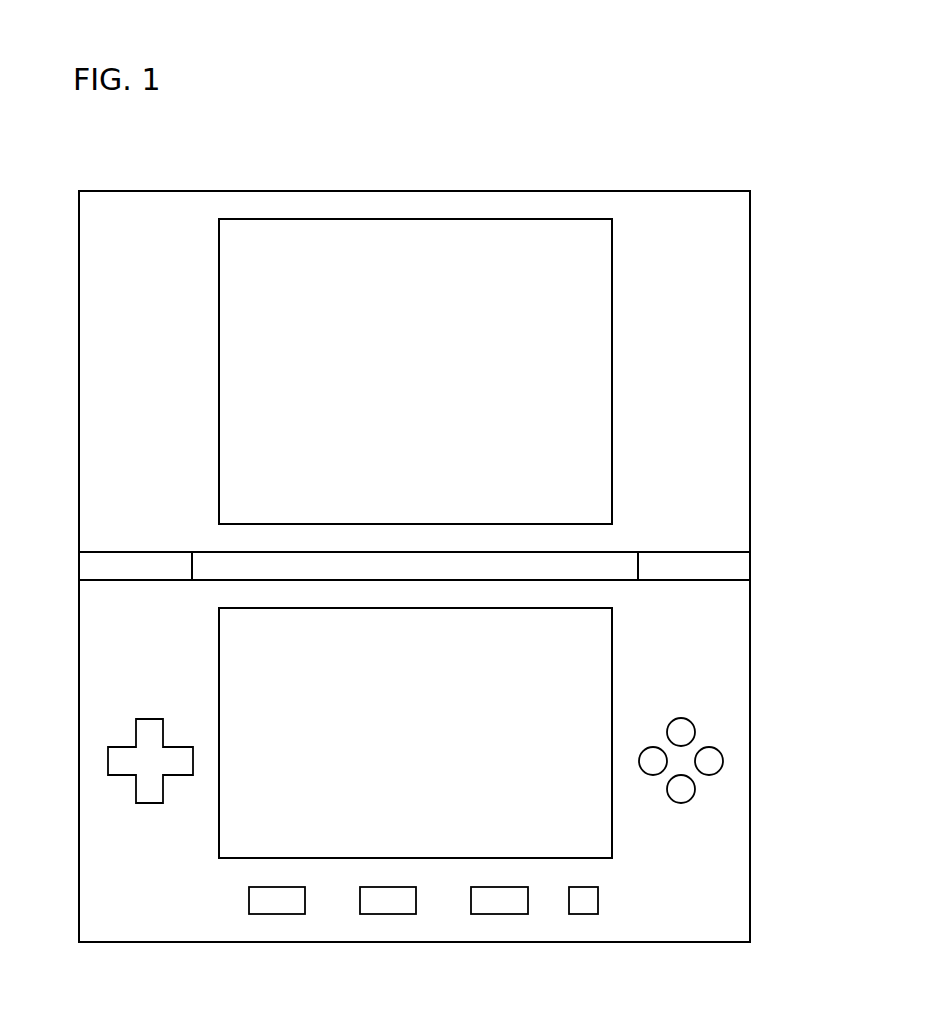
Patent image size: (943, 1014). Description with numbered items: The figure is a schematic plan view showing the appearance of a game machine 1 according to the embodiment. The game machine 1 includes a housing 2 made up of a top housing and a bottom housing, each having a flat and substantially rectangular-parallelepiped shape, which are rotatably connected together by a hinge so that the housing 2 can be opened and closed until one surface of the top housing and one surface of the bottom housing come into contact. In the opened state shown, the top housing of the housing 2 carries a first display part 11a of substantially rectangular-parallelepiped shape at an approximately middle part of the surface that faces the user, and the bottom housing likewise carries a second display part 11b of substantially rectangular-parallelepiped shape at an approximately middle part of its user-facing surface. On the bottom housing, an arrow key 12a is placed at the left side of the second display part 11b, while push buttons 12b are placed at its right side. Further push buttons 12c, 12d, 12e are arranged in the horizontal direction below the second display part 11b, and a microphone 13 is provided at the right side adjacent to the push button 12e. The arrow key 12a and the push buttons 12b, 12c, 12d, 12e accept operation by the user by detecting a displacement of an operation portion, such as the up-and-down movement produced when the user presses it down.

The game machine 1 is at (756, 160).
The housing 2 is at (79, 632).
The first display part 11a is at (612, 243).
The second display part 11b is at (612, 630).
The arrow key 12a is at (88, 741).
The push buttons 12b is at (747, 732).
The push button 12c is at (262, 914).
The push button 12d is at (375, 914).
The push button 12e is at (483, 914).
The microphone 13 is at (585, 914).